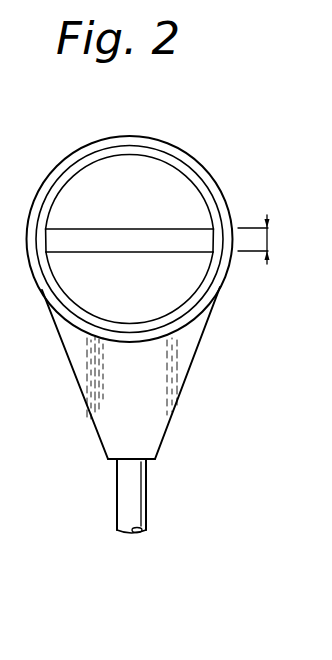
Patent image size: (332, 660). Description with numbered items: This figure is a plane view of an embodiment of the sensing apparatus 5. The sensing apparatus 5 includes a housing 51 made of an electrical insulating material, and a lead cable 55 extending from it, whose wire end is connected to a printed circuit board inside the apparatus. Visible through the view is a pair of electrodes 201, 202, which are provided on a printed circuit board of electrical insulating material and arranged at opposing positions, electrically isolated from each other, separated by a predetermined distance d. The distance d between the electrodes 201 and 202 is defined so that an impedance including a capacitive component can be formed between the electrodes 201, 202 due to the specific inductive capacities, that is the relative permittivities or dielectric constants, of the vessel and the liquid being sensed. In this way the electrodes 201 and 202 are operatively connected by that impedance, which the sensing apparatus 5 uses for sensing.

The sensing apparatus 5 is at (162, 128).
The electrode 201 is at (183, 190).
The electrode 202 is at (188, 277).
The predetermined distance d is at (264, 239).
The housing 51 is at (178, 380).
The lead cable 55 is at (133, 503).